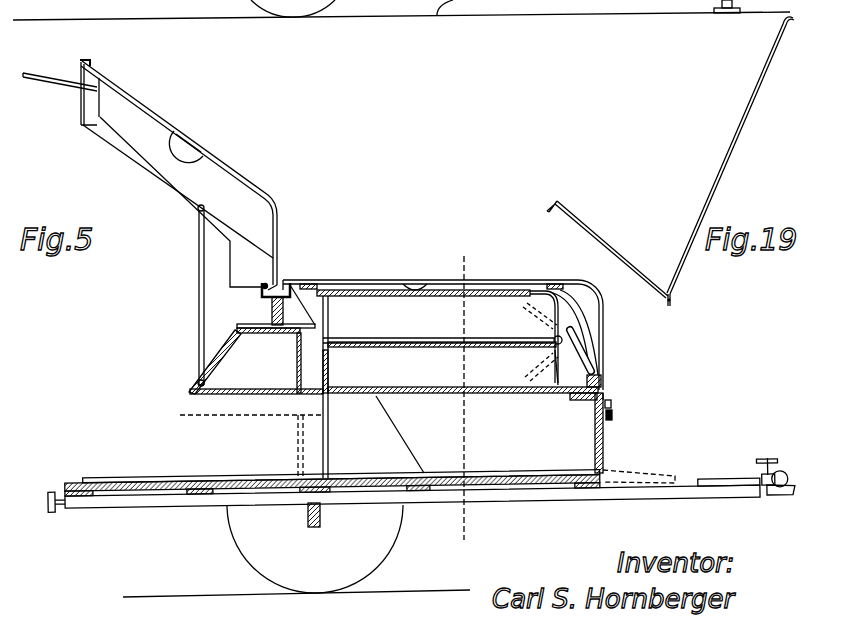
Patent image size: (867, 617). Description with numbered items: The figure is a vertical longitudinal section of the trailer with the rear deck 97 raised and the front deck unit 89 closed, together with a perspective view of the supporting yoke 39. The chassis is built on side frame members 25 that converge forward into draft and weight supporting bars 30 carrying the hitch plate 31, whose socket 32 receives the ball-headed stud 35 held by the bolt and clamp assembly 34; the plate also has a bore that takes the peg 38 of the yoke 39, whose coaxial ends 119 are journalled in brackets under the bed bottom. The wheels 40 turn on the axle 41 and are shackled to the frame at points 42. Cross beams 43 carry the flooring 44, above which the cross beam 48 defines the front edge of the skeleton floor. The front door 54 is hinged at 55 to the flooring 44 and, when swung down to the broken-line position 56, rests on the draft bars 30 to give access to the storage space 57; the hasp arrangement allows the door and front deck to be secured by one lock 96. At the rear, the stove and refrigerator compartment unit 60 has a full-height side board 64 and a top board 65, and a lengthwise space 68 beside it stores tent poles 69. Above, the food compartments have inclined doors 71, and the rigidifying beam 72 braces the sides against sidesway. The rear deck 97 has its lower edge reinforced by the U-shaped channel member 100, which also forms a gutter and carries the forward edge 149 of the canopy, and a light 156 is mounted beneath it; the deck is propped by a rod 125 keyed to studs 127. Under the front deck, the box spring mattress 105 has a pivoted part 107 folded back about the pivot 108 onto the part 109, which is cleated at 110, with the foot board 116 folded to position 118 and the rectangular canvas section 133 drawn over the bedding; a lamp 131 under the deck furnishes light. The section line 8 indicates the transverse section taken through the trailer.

In FIG. 5, the section line 8 is at (440, 250).
In FIG. 5, the side frame members 25 is at (180, 455).
In FIG. 5, the draft and weight supporting bars 30 is at (663, 497).
In FIG. 5, the plate 31 is at (737, 482).
In FIG. 5, the socket 32 is at (780, 476).
In FIG. 5, the bolt and clamp assembly 34 is at (768, 463).
In FIG. 5, the ball-headed stud 35 is at (778, 502).
In FIG. 19, the peg 38 is at (675, 300).
In FIG. 19, the yoke 39 is at (722, 160).
In FIG. 5, the wheels 40 is at (250, 568).
In FIG. 5, the axle 41 is at (307, 528).
In FIG. 5, the shackle points 42 is at (200, 503).
In FIG. 5, the cross beams 43 is at (580, 507).
In FIG. 5, the flooring 44 is at (517, 488).
In FIG. 5, the cross beam 48 is at (577, 400).
In FIG. 5, the door 54 is at (603, 440).
In FIG. 5, the hinge 55 is at (587, 490).
In FIG. 5, the opened position of door 56 is at (641, 470).
In FIG. 5, the space 57 is at (561, 452).
In FIG. 5, the stove and refrigerator compartment unit 60 is at (182, 392).
In FIG. 5, the side board 64 is at (173, 430).
In FIG. 5, the top board 65 is at (200, 413).
In FIG. 5, the space 68 is at (265, 288).
In FIG. 5, the tent poles 69 is at (120, 462).
In FIG. 5, the door 71 is at (197, 377).
In FIG. 5, the rigidifying beam 72 is at (268, 314).
In FIG. 5, the deck unit 89 is at (515, 279).
In FIG. 5, the lock 96 is at (613, 417).
In FIG. 5, the rear deck 97 is at (257, 183).
In FIG. 5, the U-shaped channel member 100 is at (97, 72).
In FIG. 5, the box spring mattress 105 is at (483, 317).
In FIG. 5, the mattress part 107 is at (550, 312).
In FIG. 5, the pivot 108 is at (563, 340).
In FIG. 5, the mattress part 109 is at (552, 370).
In FIG. 5, the cleat 110 is at (557, 397).
In FIG. 5, the foot board 116 is at (373, 290).
In FIG. 5, the folded position of foot board 118 is at (350, 290).
In FIG. 19, the coaxial ends 119 is at (772, 28).
In FIG. 5, the rods 125 is at (199, 290).
In FIG. 5, the studs 127 is at (196, 212).
In FIG. 5, the lamp 131 is at (438, 268).
In FIG. 5, the rectangular section 133 is at (583, 330).
In FIG. 5, the forward edge of canopy 149 is at (72, 90).
In FIG. 5, the light 156 is at (199, 144).